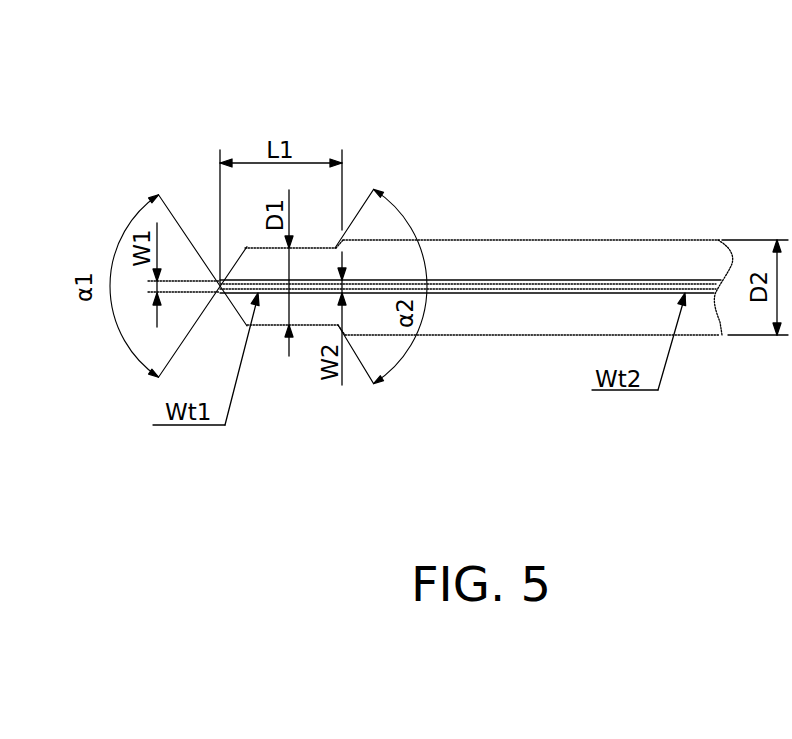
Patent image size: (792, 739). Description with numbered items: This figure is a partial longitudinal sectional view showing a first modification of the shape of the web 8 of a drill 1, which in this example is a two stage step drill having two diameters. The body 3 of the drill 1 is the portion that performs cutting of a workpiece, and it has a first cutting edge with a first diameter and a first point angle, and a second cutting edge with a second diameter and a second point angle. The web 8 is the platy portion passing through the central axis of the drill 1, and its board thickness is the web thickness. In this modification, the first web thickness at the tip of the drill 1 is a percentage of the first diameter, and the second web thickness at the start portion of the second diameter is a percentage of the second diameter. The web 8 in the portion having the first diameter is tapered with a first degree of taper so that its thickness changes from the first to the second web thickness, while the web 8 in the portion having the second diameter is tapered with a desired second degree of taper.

The drill 1 is at (670, 112).
The body 3 is at (483, 375).
The web 8 is at (672, 280).